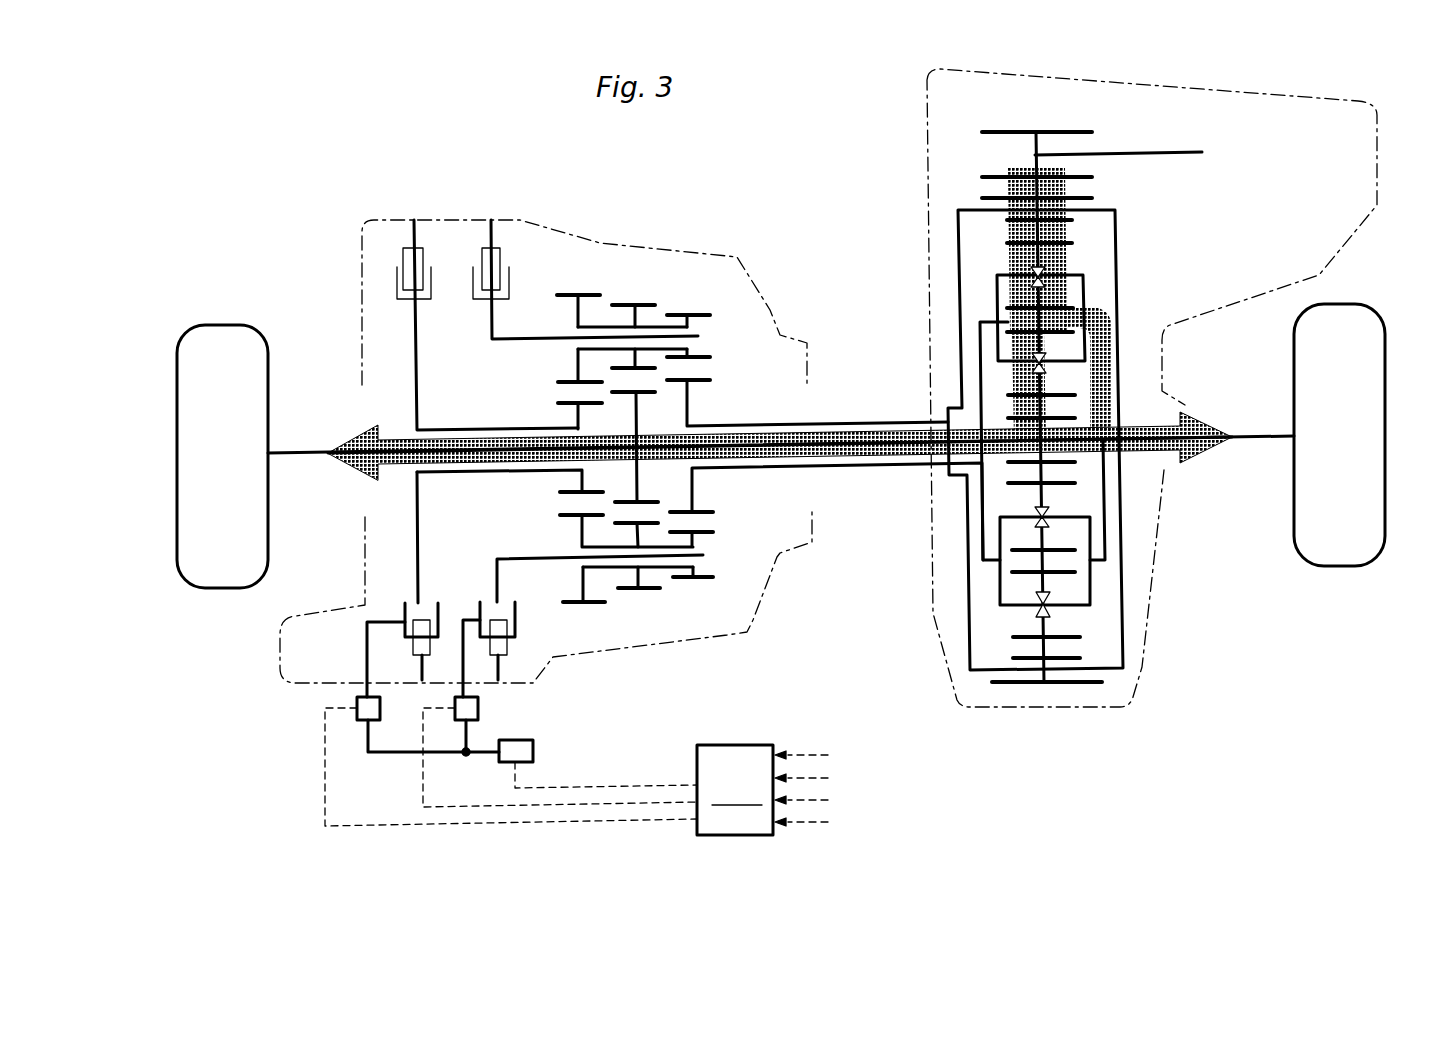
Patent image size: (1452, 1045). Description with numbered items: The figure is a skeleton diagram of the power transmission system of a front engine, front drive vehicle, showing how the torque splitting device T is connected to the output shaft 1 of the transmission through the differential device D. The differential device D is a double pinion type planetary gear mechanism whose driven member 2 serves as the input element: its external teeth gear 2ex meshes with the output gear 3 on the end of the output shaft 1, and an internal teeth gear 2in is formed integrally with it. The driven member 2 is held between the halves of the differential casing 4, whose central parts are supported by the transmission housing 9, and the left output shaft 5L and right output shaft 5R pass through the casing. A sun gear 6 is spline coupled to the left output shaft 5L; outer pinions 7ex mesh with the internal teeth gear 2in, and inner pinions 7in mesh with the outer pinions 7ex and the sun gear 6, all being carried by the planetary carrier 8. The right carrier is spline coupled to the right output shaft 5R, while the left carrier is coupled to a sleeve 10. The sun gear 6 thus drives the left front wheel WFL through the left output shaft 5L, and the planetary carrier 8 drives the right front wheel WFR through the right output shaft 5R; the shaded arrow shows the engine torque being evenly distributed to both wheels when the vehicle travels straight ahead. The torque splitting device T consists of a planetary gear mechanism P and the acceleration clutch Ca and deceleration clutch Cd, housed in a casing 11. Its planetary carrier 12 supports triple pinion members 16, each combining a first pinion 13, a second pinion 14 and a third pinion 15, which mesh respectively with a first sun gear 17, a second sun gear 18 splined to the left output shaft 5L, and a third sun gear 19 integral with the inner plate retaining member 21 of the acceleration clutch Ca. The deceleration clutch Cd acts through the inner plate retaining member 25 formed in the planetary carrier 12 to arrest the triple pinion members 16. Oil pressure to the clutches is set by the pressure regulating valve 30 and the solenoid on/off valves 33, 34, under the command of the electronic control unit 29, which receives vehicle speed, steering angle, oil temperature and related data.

The output shaft 1 is at (1162, 152).
The driven member 2 is at (1105, 215).
The external teeth gear 2ex is at (1078, 198).
The internal teeth gear 2in is at (1068, 222).
The output gear 3 is at (1010, 131).
The differential casing 4 is at (1123, 627).
The left output shaft 5L is at (300, 455).
The right output shaft 5R is at (1269, 440).
The sun gear 6 is at (1060, 465).
The inner pinions 7in is at (1057, 397).
The outer pinions 7ex is at (1008, 247).
The planetary carrier 8 is at (1107, 533).
The transmission housing 9 is at (1138, 693).
The sleeve 10 is at (862, 470).
The casing 11 is at (278, 658).
The planetary carrier 12 is at (522, 557).
The first pinion 13 is at (720, 447).
The second pinion 14 is at (648, 302).
The third pinion 15 is at (590, 288).
The triple pinion members 16 is at (665, 446).
The first sun gear 17 is at (705, 373).
The second sun gear 18 is at (650, 385).
The third sun gear 19 is at (567, 400).
The inner plate retaining member 21 is at (415, 363).
The inner plate retaining member 25 is at (490, 310).
The electronic control unit 29 is at (798, 789).
The pressure regulating valve 30 is at (533, 752).
The solenoid on/off valve 33 is at (478, 705).
The solenoid on/off valve 34 is at (357, 700).
The torque splitting device T is at (453, 217).
The acceleration clutch Ca is at (388, 267).
The deceleration clutch Cd is at (517, 257).
The planetary gear mechanism P is at (720, 332).
The differential device D is at (1143, 313).
The left front wheel WFL is at (222, 332).
The right front wheel WFR is at (1374, 336).